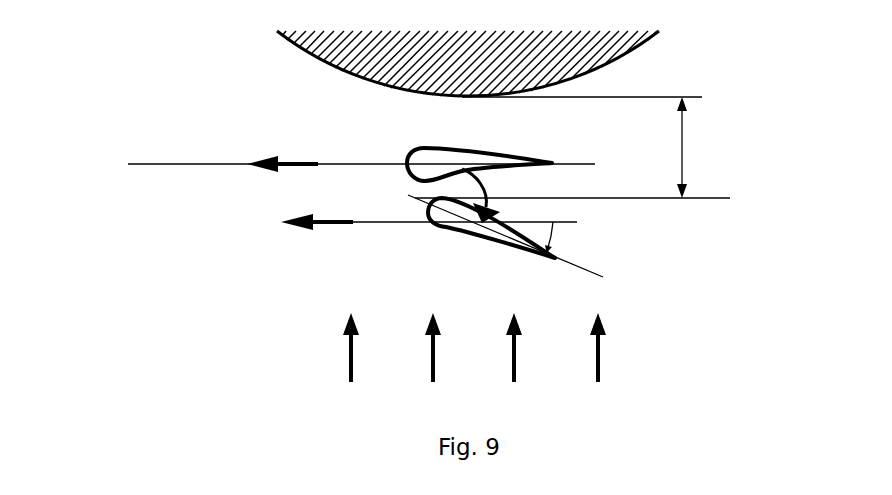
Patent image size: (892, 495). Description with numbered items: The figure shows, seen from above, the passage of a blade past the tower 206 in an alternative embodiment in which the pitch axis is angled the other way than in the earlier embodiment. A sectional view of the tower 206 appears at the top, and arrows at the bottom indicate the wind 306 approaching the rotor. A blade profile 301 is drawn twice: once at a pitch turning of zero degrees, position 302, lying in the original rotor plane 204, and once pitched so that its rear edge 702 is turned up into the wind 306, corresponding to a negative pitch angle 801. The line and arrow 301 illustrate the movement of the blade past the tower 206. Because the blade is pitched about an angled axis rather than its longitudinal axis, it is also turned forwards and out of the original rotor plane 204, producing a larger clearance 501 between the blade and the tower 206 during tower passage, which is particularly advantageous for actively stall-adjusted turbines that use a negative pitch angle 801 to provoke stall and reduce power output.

The tower 206 is at (595, 48).
The original rotor plane 204 is at (192, 163).
The blade profile 301 is at (282, 223).
The blade position at zero pitch 302 is at (423, 150).
The clearance 501 is at (683, 143).
The negative pitch angle 801 is at (551, 237).
The rear edge 702 is at (555, 258).
The wind 306 is at (598, 367).